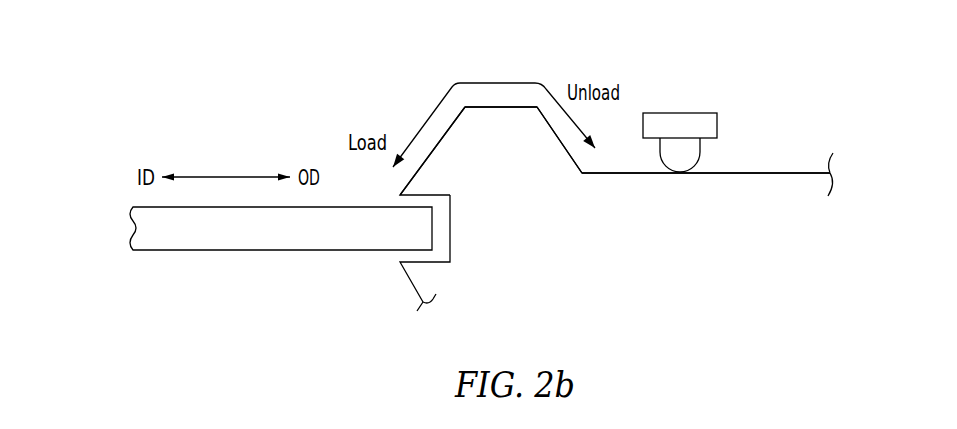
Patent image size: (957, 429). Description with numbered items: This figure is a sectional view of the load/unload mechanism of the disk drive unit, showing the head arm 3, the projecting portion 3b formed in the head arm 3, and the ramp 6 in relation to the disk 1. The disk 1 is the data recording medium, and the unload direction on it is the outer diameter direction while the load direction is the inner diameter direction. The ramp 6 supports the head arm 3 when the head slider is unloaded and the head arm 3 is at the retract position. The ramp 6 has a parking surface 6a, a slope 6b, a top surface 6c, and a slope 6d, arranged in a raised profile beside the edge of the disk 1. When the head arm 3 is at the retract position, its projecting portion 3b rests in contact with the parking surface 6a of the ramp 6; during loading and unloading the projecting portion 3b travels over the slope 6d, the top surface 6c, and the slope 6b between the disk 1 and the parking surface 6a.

The disk 1 is at (235, 251).
The ramp 6 is at (512, 174).
The parking surface 6a is at (781, 173).
The slope 6b is at (570, 153).
The top surface 6c is at (498, 107).
The slope 6d is at (448, 130).
The head arm 3 is at (690, 118).
The projecting portion 3b is at (680, 165).